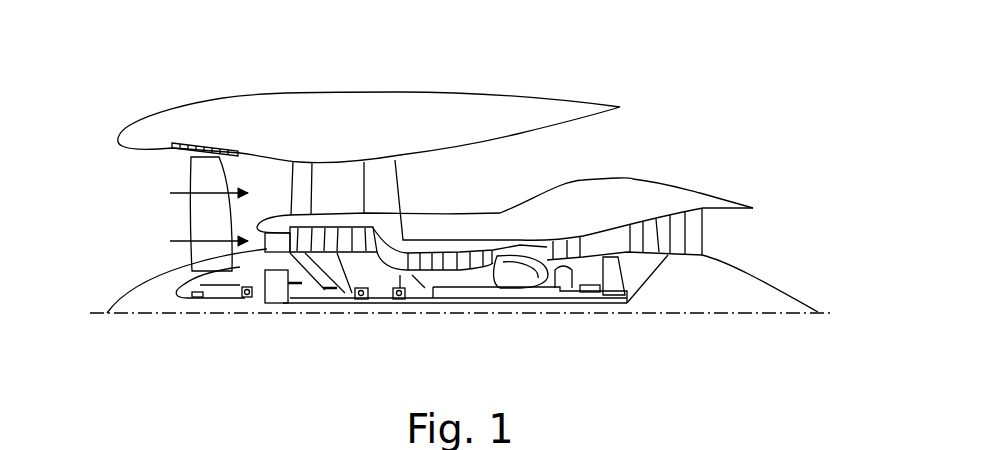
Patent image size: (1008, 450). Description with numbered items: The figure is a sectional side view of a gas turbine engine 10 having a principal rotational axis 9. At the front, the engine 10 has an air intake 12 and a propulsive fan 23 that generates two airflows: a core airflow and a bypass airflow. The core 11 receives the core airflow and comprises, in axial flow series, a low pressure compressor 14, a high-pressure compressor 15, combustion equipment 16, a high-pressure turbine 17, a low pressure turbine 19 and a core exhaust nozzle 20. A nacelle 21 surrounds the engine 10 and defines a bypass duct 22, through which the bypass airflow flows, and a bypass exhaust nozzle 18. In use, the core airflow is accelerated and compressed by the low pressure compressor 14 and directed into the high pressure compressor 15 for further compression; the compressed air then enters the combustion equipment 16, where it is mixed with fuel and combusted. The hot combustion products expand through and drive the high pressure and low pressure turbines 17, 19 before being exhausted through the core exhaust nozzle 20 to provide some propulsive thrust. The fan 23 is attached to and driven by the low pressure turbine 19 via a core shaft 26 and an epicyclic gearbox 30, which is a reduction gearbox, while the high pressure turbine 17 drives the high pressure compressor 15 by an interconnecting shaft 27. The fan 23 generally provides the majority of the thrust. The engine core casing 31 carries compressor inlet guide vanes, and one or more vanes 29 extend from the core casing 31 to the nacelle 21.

The principal rotational axis 9 is at (727, 315).
The gas turbine engine 10 is at (180, 106).
The core 11 is at (527, 227).
The air intake 12 is at (124, 166).
The low pressure compressor 14 is at (338, 238).
The high-pressure compressor 15 is at (453, 260).
The combustion equipment 16 is at (513, 263).
The high-pressure turbine 17 is at (567, 247).
The bypass exhaust nozzle 18 is at (709, 107).
The low pressure turbine 19 is at (680, 245).
The core exhaust nozzle 20 is at (757, 242).
The nacelle 21 is at (379, 102).
The bypass duct 22 is at (573, 147).
The propulsive fan 23 is at (196, 228).
The core shaft 26 is at (423, 303).
The interconnecting shaft 27 is at (480, 291).
The vanes 29 is at (302, 182).
The epicyclic gearbox 30 is at (277, 298).
The engine core casing 31 is at (333, 205).